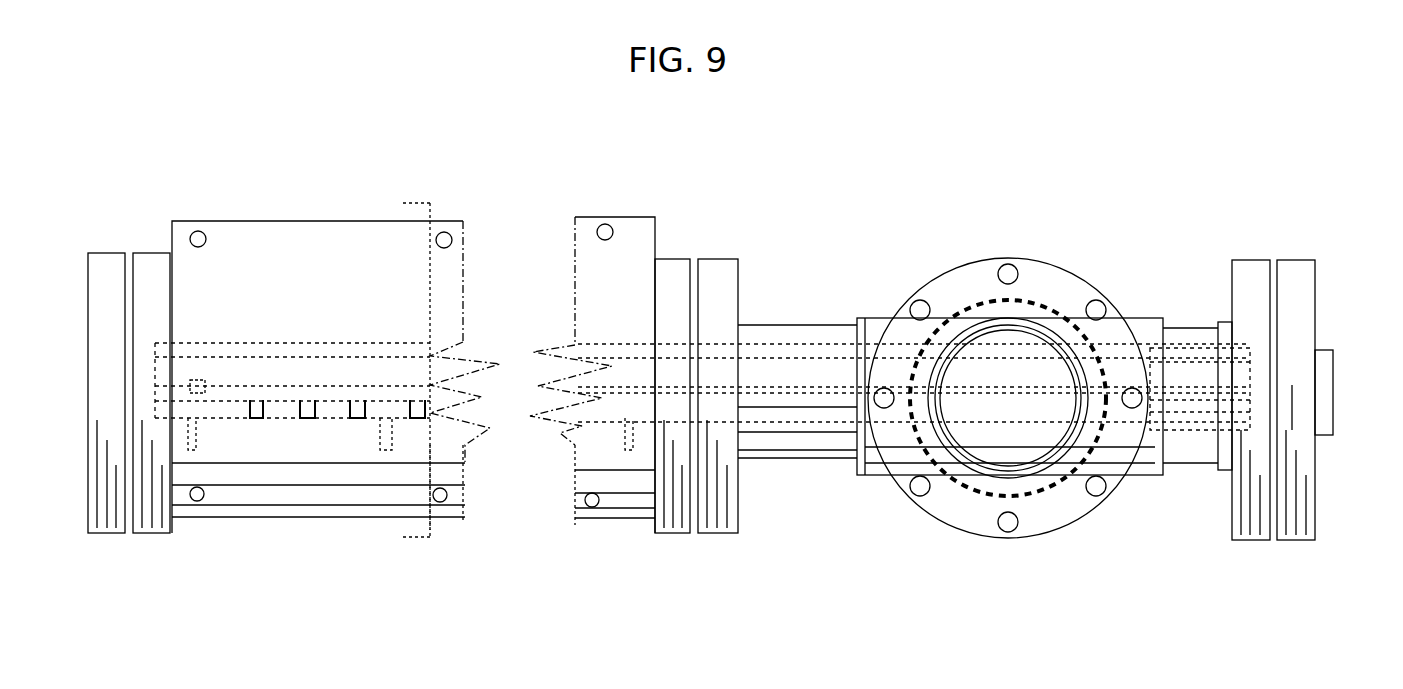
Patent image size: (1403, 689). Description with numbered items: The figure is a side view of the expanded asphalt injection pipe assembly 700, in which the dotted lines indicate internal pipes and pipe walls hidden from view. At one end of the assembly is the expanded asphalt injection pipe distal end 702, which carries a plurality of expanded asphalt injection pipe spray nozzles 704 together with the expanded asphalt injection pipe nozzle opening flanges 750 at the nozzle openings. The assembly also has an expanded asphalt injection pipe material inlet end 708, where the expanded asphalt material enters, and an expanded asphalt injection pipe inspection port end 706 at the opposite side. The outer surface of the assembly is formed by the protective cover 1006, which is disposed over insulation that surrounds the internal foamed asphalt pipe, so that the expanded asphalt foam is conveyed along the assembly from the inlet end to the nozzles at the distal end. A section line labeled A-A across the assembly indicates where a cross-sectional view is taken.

The expanded asphalt injection pipe assembly 700 is at (522, 226).
The expanded asphalt injection pipe distal end 702 is at (158, 257).
The expanded asphalt injection pipe spray nozzles 704 is at (352, 418).
The expanded asphalt injection pipe inspection port end 706 is at (1350, 398).
The expanded asphalt injection pipe material inlet end 708 is at (1008, 398).
The expanded asphalt injection pipe nozzle opening flanges 750 is at (588, 545).
The protective cover 1006 is at (286, 262).